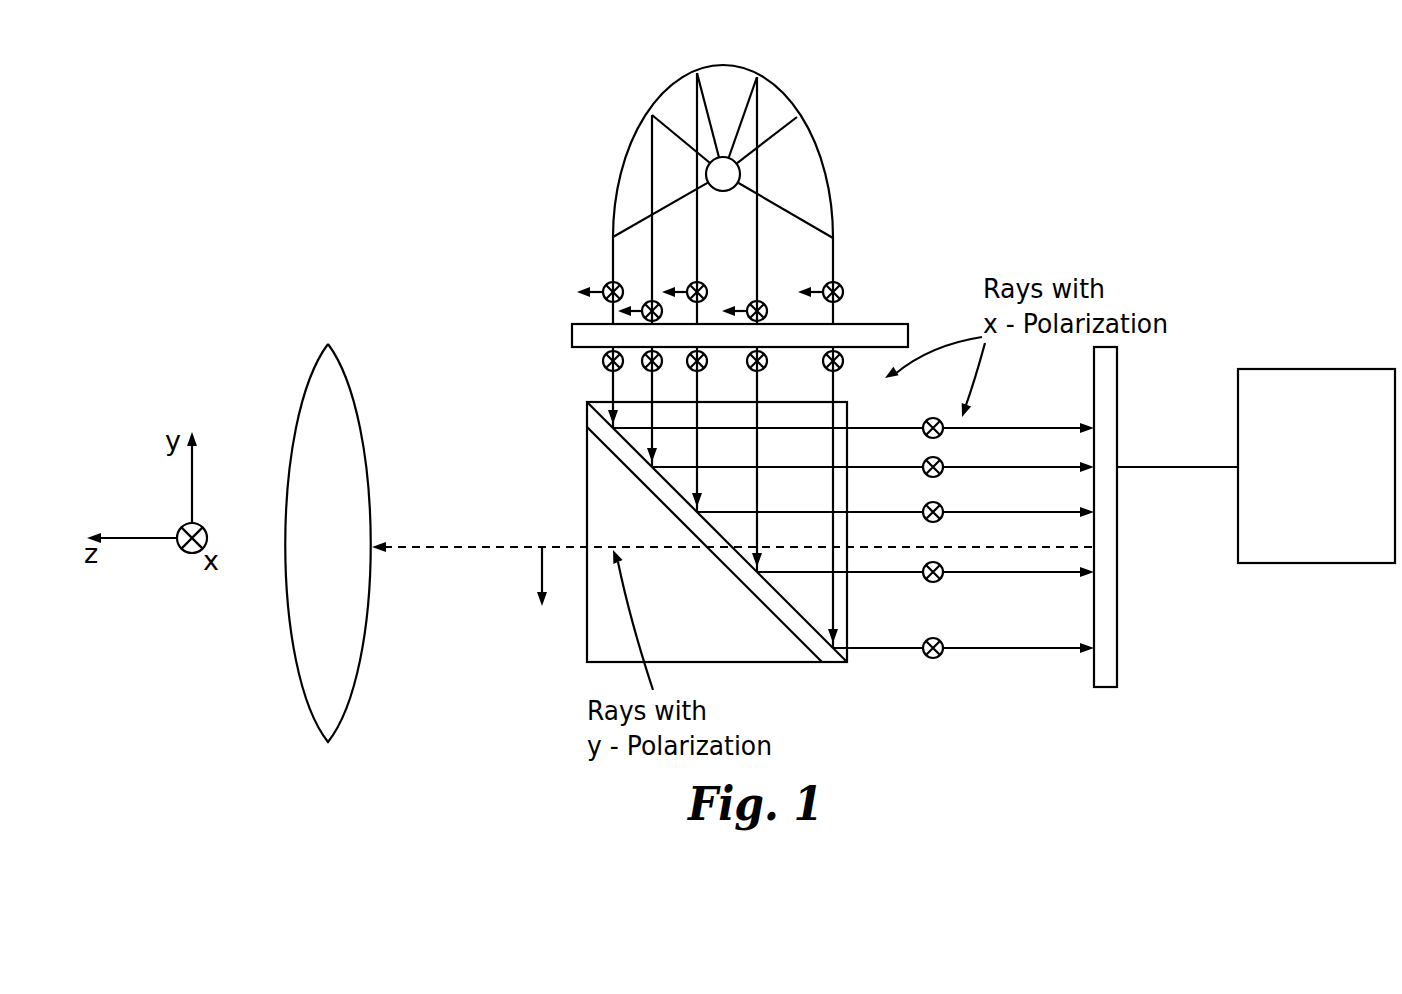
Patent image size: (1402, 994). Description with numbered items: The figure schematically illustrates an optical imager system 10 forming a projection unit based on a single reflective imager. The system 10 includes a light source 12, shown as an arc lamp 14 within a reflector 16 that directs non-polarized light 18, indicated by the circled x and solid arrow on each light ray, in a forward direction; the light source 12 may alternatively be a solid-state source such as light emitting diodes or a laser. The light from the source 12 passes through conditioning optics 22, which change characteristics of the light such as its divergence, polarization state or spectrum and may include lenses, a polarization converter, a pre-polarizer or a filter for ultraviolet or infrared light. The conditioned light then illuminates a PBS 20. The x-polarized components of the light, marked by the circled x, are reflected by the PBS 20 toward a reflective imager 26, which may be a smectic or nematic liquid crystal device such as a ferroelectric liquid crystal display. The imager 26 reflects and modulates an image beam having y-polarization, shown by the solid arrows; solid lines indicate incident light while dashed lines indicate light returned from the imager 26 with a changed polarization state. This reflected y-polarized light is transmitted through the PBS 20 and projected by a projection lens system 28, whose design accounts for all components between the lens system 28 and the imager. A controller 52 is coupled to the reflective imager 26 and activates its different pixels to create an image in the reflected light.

The optical imager system 10 is at (1040, 136).
The light source 12 is at (652, 183).
The arc lamp 14 is at (733, 173).
The reflector 16 is at (685, 77).
The non-polarized light 18 is at (577, 263).
The PBS 20 is at (587, 450).
The conditioning optics 22 is at (875, 326).
The reflective imager 26 is at (1110, 535).
The projection lens system 28 is at (293, 660).
The controller 52 is at (1297, 563).